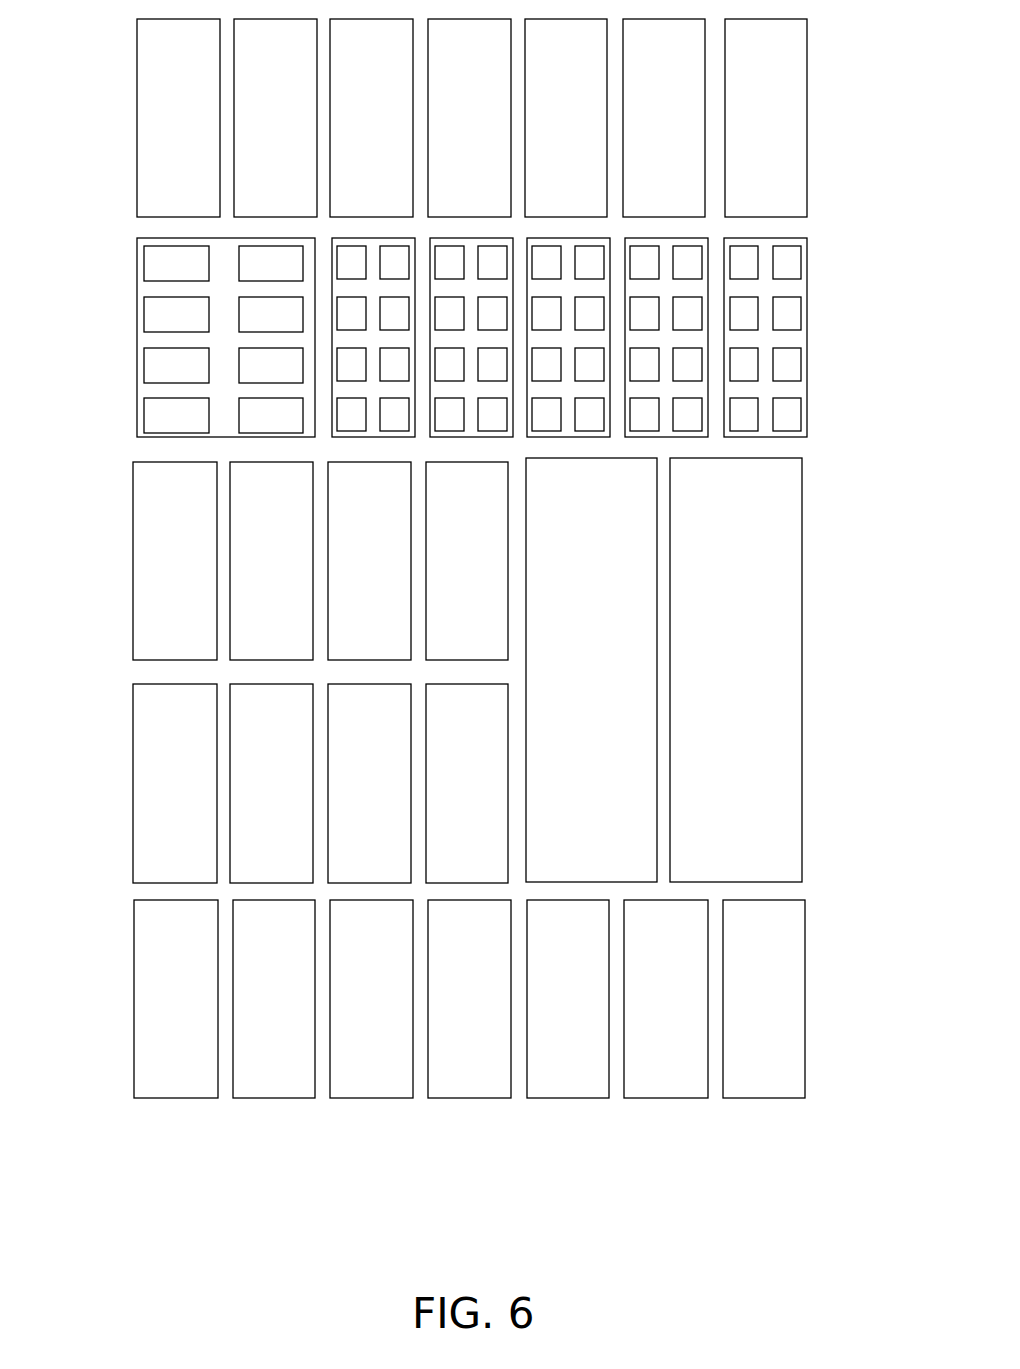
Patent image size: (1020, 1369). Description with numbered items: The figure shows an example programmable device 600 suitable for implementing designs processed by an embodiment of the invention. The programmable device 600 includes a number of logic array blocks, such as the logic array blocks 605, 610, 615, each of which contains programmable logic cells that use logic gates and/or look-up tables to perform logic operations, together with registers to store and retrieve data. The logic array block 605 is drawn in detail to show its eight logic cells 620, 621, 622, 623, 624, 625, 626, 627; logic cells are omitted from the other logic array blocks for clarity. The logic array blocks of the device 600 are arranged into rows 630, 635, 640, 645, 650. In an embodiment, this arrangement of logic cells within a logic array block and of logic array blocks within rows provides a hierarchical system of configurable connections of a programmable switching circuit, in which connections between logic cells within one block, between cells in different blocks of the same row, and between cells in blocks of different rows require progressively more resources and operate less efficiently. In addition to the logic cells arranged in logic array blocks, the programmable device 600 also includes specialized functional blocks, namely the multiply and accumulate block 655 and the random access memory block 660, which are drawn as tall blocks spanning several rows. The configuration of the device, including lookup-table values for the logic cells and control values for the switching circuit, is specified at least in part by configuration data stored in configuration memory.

The programmable device 600 is at (468, 596).
The logic array block 605 is at (172, 337).
The logic array block 610 is at (178, 118).
The logic array block 615 is at (776, 1068).
The logic cell 620 is at (176, 415).
The logic cell 621 is at (271, 415).
The logic cell 622 is at (176, 365).
The logic cell 623 is at (271, 365).
The logic cell 624 is at (176, 314).
The logic cell 625 is at (271, 314).
The logic cell 626 is at (271, 263).
The logic cell 627 is at (176, 263).
The row 630 is at (521, 112).
The row 635 is at (468, 339).
The row 640 is at (149, 450).
The row 645 is at (149, 673).
The row 650 is at (427, 1034).
The multiply and accumulate block 655 is at (591, 670).
The random access memory block 660 is at (736, 670).